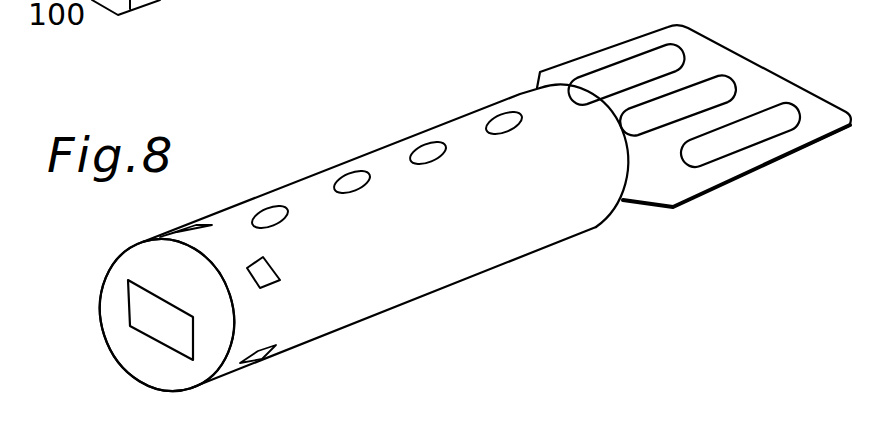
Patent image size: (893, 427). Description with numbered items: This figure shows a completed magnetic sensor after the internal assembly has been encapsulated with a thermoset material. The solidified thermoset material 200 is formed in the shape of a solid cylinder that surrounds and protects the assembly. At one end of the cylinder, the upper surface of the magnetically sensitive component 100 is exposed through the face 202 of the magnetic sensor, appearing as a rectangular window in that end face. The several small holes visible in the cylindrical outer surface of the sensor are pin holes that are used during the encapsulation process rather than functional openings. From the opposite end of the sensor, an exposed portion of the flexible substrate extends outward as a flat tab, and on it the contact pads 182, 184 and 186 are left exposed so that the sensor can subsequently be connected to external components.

The magnetically sensitive component 100 is at (138, 308).
The solidified thermoset material 200 is at (392, 299).
The face 202 is at (128, 262).
The contact pad 182 is at (623, 70).
The contact pad 184 is at (722, 83).
The contact pad 186 is at (747, 140).